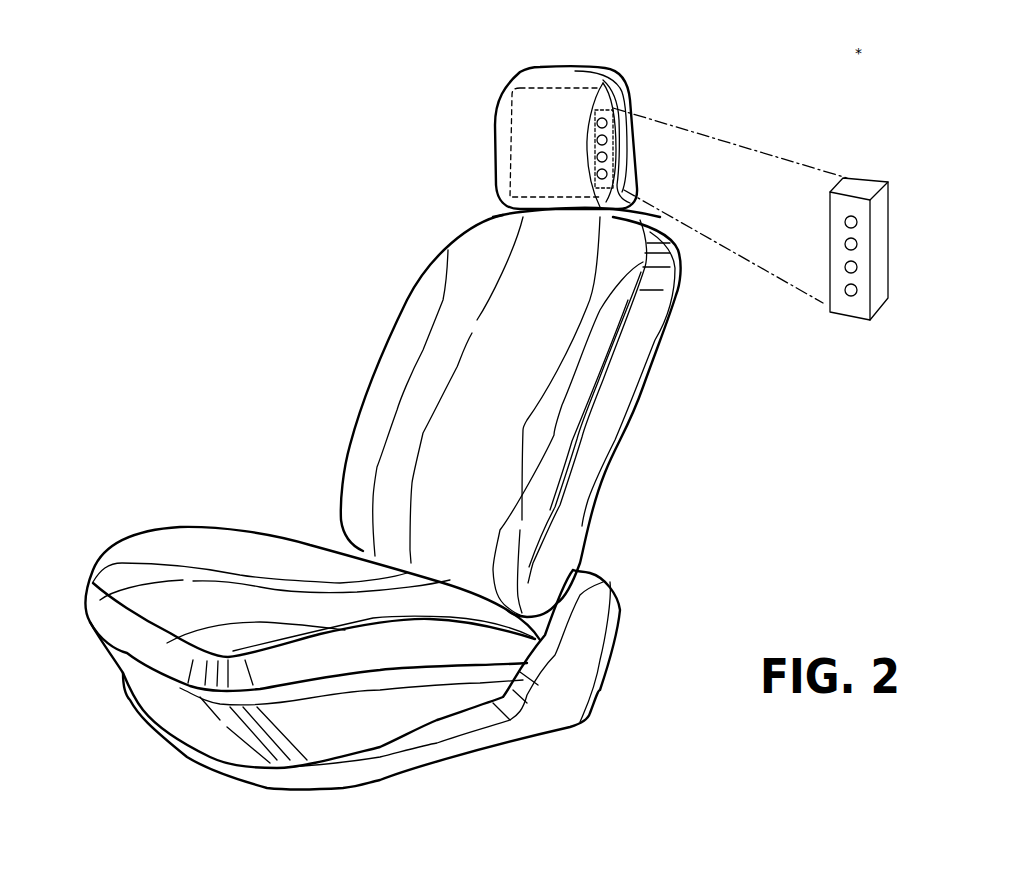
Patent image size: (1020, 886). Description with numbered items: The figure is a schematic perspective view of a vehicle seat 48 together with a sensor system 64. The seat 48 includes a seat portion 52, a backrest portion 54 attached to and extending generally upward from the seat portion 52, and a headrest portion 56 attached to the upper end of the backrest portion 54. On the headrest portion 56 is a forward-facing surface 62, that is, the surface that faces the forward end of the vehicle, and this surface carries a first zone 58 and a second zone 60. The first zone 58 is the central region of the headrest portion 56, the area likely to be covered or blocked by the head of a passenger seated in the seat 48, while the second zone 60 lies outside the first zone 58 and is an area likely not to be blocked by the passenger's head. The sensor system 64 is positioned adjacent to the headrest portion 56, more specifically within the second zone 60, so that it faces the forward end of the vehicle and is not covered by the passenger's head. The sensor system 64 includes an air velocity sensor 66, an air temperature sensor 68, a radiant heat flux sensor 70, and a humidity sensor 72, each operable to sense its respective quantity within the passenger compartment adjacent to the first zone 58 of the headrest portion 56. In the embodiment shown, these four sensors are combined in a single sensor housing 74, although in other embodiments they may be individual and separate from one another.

The seat 48 is at (262, 204).
The seat portion 52 is at (160, 613).
The backrest portion 54 is at (487, 430).
The headrest portion 56 is at (550, 66).
The first zone 58 is at (530, 157).
The second zone 60 is at (495, 167).
The forward-facing surface 62 is at (533, 115).
The sensor system 64 is at (872, 184).
The air velocity sensor 66 is at (843, 222).
The air temperature sensor 68 is at (843, 250).
The radiant heat flux sensor 70 is at (843, 275).
The humidity sensor 72 is at (848, 297).
The sensor housing 74 is at (850, 190).